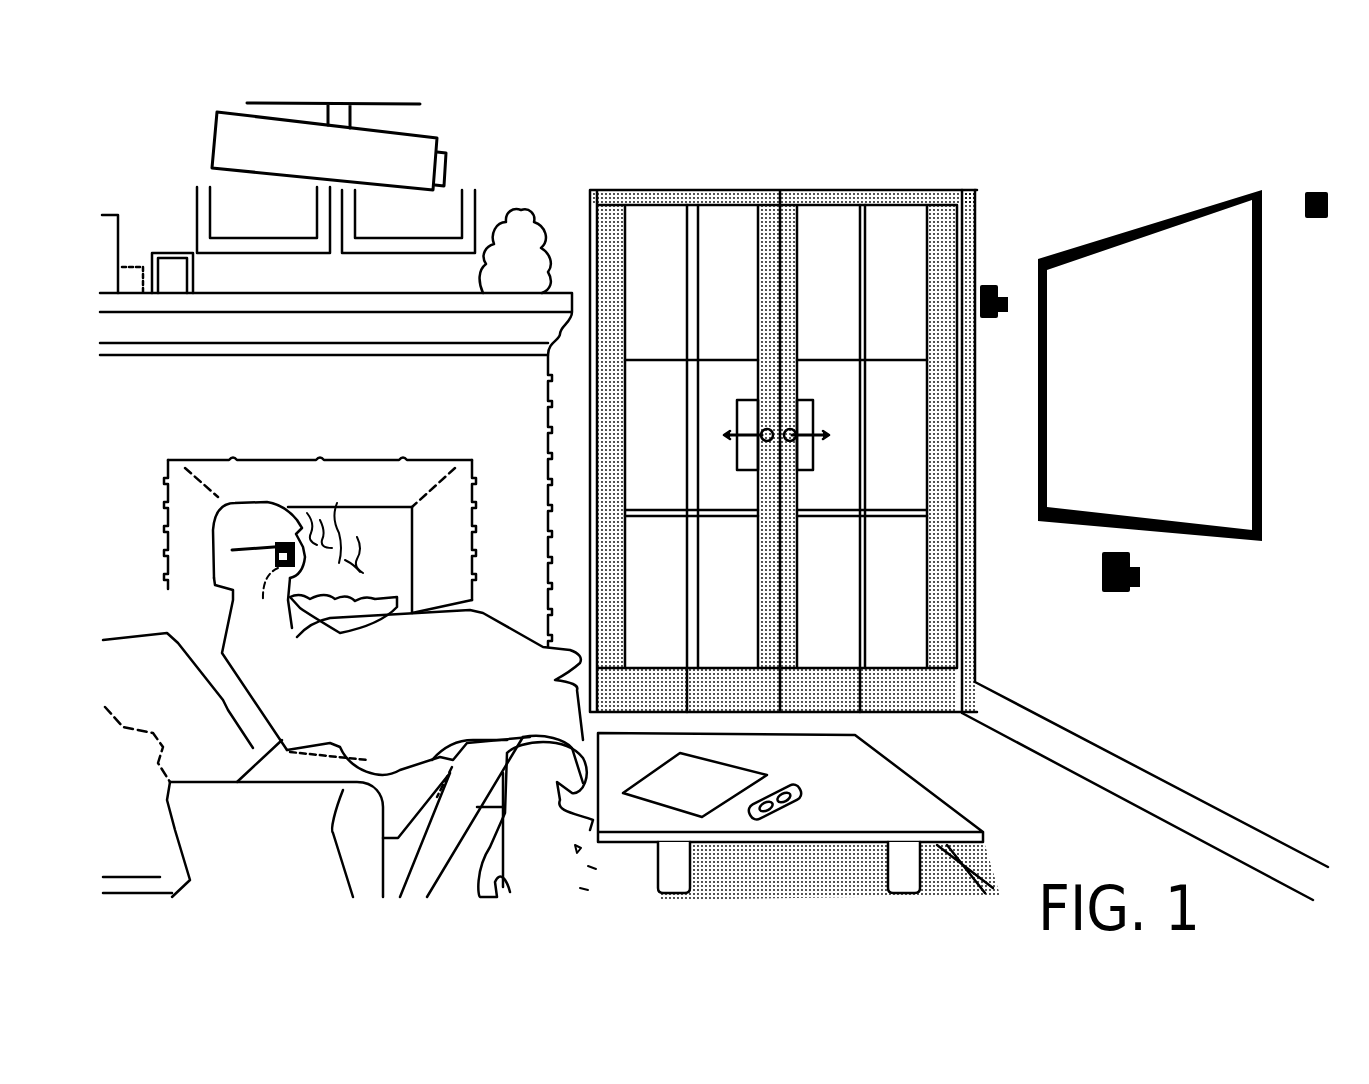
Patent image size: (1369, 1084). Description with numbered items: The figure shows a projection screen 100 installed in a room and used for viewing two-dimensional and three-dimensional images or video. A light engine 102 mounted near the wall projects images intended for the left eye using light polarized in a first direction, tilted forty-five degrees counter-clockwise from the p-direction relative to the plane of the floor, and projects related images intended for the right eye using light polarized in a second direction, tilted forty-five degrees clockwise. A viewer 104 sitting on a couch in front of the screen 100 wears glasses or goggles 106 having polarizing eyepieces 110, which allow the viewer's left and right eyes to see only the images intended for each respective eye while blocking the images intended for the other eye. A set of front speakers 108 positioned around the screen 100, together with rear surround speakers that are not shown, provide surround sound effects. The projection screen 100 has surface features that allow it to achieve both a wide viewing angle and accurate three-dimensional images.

The projection screen 100 is at (1203, 503).
The light engine 102 is at (407, 147).
The viewer 104 is at (257, 503).
The glasses or goggles 106 is at (286, 570).
The front speakers 108 is at (988, 285).
The polarizing eyepieces 110 is at (290, 603).